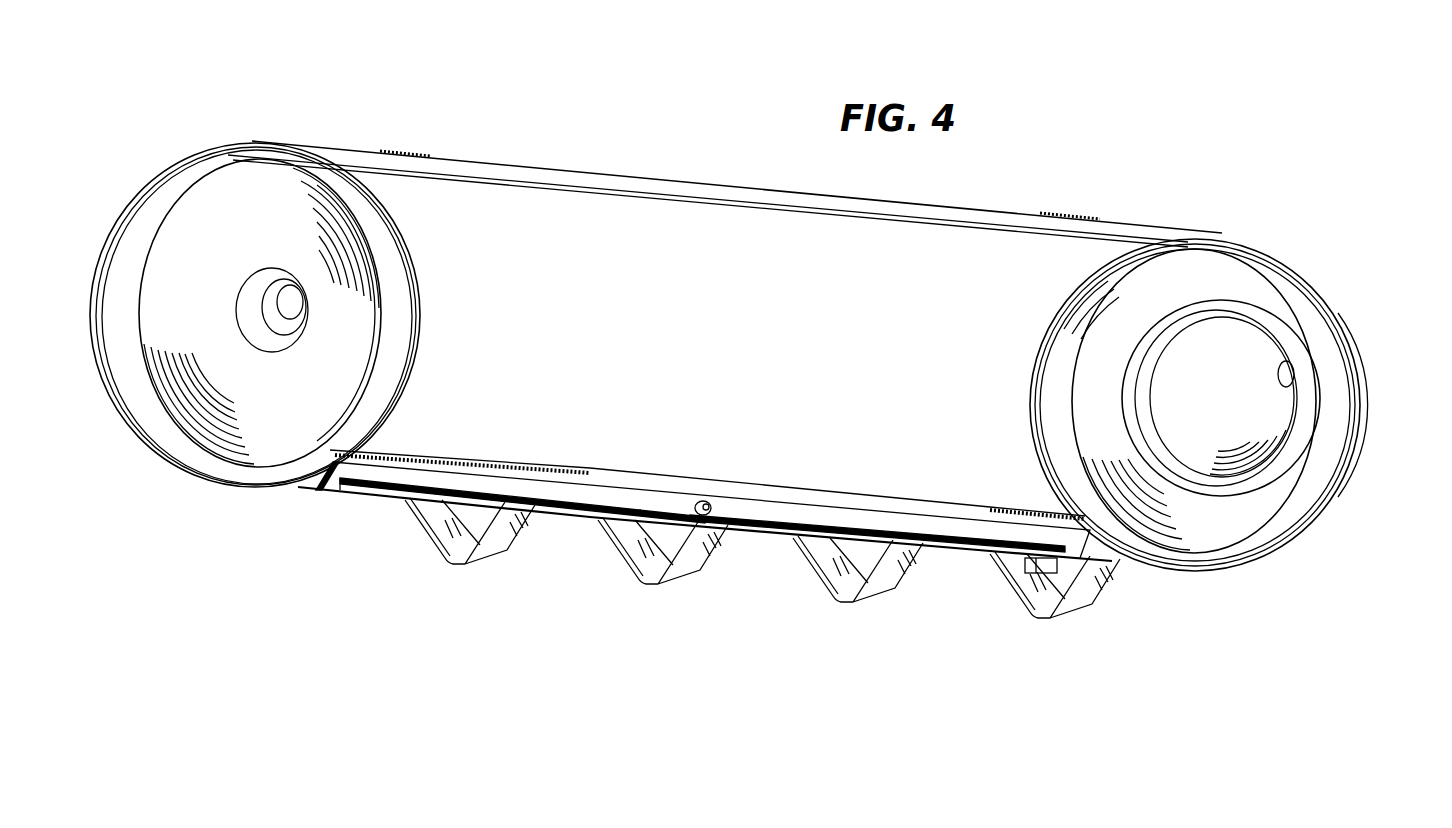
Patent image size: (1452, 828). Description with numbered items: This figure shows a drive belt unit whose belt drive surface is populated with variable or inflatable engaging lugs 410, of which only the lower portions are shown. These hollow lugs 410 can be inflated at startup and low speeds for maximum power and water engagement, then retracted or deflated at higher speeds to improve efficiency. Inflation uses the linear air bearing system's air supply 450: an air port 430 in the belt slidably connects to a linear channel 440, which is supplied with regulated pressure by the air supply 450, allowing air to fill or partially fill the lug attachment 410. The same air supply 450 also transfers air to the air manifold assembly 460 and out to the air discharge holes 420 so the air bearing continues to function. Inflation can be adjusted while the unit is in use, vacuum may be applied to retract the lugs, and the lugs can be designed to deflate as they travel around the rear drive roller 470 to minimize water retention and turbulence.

The inflatable engaging lugs 410 is at (852, 582).
The air discharge holes 420 is at (560, 519).
The air port 430 is at (655, 509).
The linear channel 440 is at (910, 530).
The air supply 450 is at (706, 502).
The air manifold assembly 460 is at (455, 450).
The rear drive roller 470 is at (238, 218).